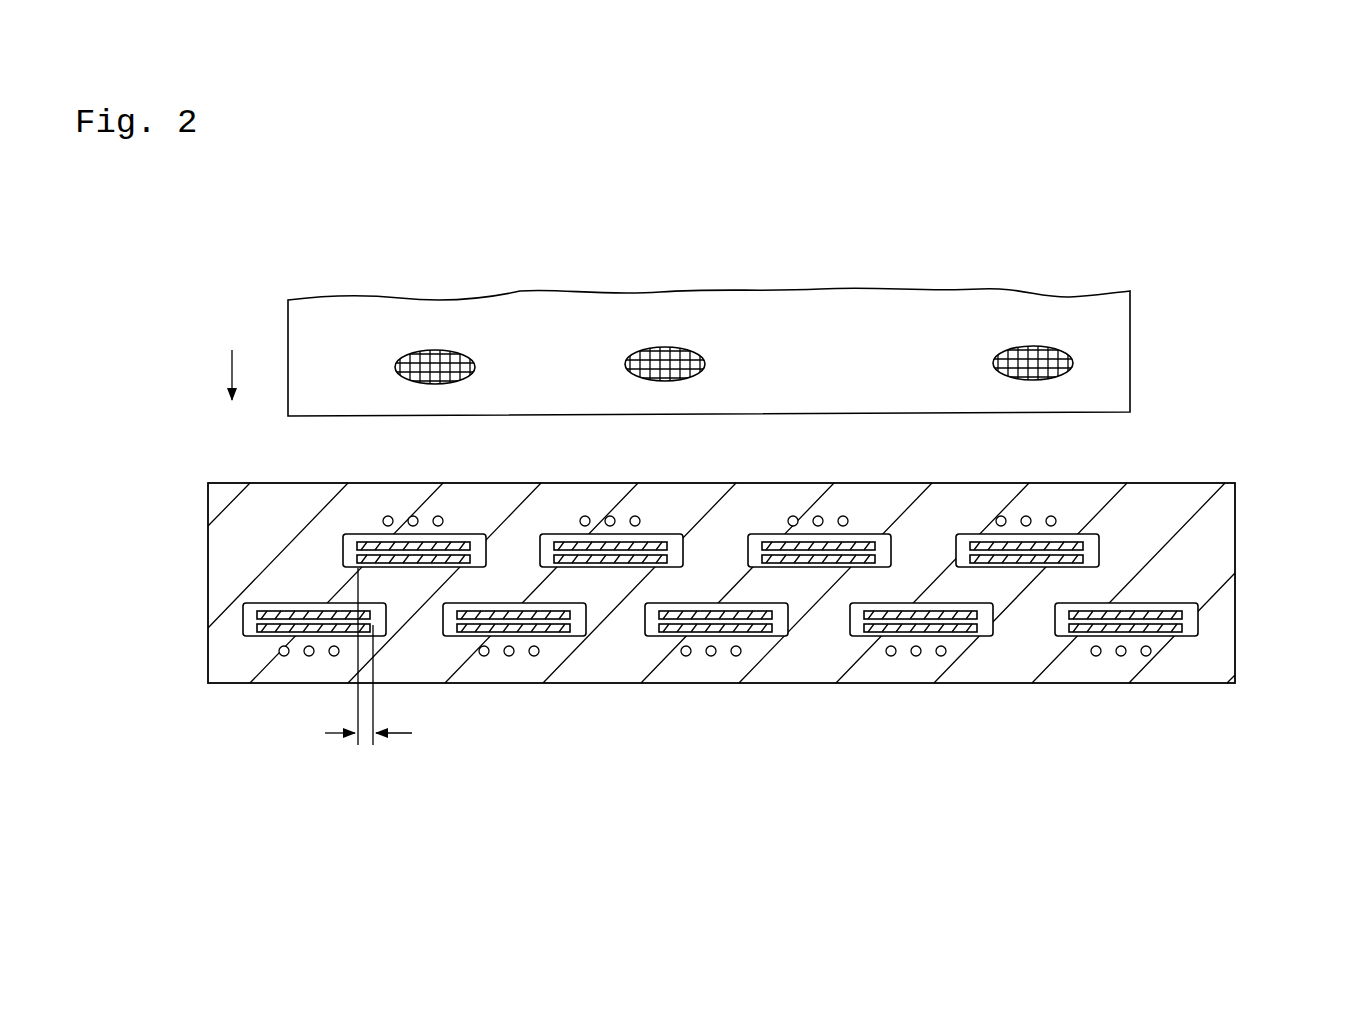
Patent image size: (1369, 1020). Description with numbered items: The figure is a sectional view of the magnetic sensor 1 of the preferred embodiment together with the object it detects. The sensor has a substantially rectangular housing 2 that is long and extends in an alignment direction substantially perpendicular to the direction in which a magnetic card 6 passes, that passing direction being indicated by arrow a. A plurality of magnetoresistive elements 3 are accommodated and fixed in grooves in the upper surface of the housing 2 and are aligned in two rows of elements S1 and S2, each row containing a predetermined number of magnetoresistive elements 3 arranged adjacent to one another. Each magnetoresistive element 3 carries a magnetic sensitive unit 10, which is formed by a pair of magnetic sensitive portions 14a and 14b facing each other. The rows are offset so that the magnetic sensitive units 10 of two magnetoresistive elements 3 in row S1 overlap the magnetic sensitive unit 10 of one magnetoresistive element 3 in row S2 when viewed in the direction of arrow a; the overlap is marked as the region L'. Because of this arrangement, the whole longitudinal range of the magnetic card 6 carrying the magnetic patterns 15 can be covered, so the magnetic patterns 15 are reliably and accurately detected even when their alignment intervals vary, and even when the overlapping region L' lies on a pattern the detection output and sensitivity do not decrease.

The magnetic sensor 1 is at (172, 466).
The housing 2 is at (220, 541).
The magnetoresistive elements 3 is at (644, 583).
The magnetic card 6 is at (300, 357).
The magnetic sensitive unit 10 is at (234, 643).
The magnetic sensitive portion 14a is at (262, 618).
The magnetic sensitive portion 14b is at (263, 628).
The magnetic patterns 15 is at (405, 357).
The arrow a is at (220, 371).
The row of elements S1 is at (1254, 524).
The row of elements S2 is at (1254, 617).
The region L' is at (373, 656).